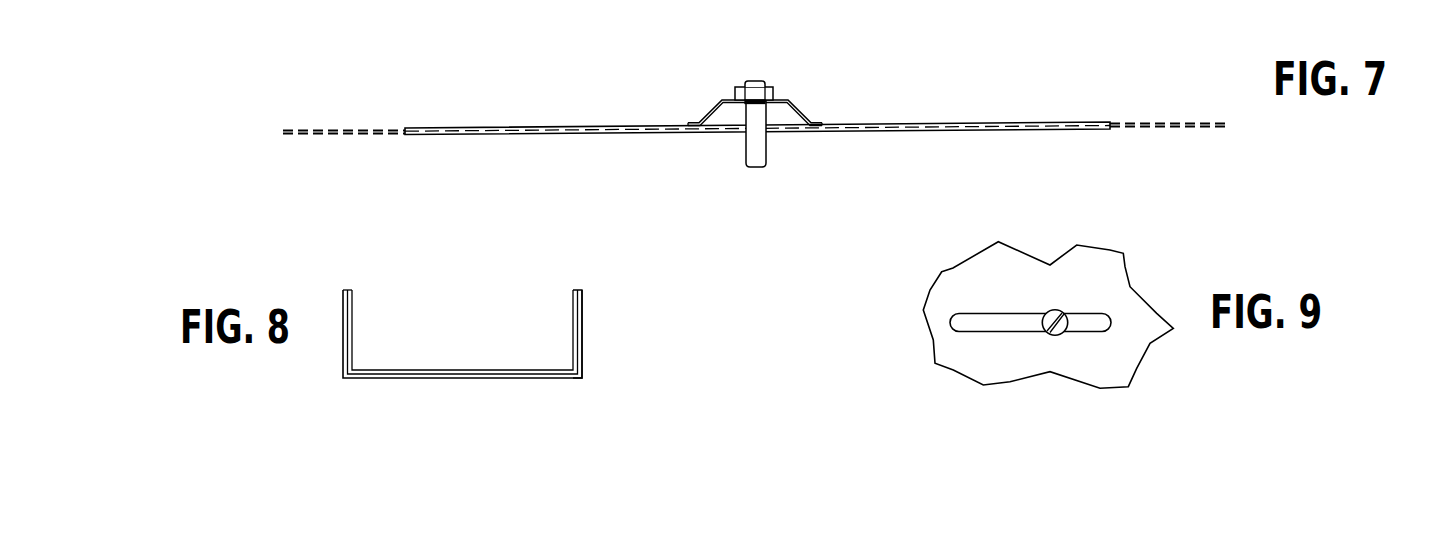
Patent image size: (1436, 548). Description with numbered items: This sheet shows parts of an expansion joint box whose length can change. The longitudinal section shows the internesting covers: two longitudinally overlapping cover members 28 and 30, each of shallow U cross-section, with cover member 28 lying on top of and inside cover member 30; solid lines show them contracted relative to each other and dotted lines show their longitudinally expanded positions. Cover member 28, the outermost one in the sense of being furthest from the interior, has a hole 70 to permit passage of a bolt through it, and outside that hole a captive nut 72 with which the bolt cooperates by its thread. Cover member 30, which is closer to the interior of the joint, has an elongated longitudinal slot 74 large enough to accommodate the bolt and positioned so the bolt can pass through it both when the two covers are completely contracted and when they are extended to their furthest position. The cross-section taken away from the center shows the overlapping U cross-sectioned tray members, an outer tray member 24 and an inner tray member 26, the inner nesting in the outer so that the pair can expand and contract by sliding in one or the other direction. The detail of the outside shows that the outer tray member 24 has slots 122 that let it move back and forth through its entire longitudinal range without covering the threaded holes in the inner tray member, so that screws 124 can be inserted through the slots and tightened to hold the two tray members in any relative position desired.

In FIG. 8, the outer U cross-sectioned tray member 24 is at (502, 309).
In FIG. 9, the outer U cross-sectioned tray member 24 is at (1117, 277).
In FIG. 8, the inner U cross-sectioned tray member 26 is at (571, 311).
In FIG. 7, the cover member 28 is at (1043, 122).
In FIG. 7, the cover member 30 is at (327, 129).
In FIG. 7, the hole 70 is at (778, 124).
In FIG. 7, the captive nut 72 is at (735, 94).
In FIG. 7, the elongated longitudinal slot 74 is at (672, 133).
In FIG. 9, the slots 122 is at (990, 313).
In FIG. 9, the screws 124 is at (1062, 313).